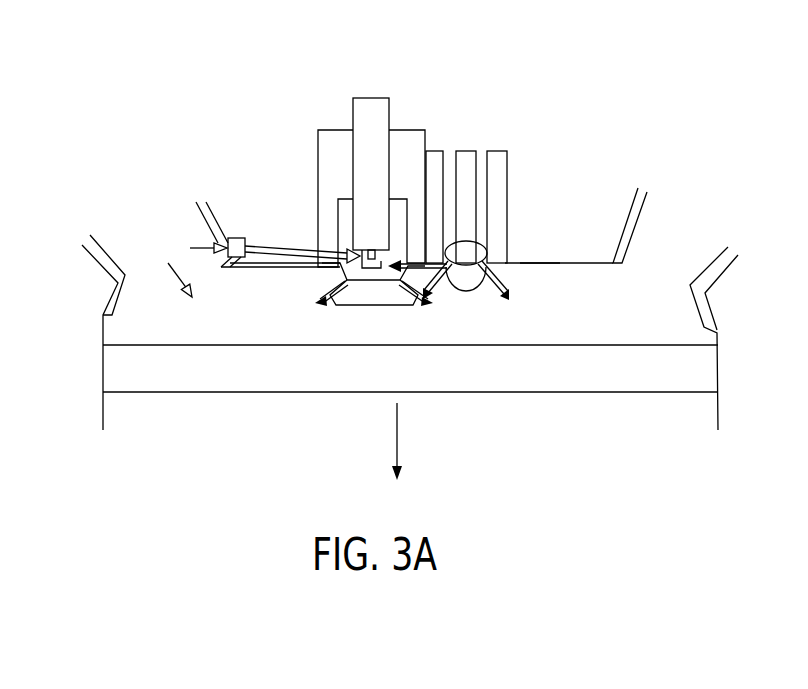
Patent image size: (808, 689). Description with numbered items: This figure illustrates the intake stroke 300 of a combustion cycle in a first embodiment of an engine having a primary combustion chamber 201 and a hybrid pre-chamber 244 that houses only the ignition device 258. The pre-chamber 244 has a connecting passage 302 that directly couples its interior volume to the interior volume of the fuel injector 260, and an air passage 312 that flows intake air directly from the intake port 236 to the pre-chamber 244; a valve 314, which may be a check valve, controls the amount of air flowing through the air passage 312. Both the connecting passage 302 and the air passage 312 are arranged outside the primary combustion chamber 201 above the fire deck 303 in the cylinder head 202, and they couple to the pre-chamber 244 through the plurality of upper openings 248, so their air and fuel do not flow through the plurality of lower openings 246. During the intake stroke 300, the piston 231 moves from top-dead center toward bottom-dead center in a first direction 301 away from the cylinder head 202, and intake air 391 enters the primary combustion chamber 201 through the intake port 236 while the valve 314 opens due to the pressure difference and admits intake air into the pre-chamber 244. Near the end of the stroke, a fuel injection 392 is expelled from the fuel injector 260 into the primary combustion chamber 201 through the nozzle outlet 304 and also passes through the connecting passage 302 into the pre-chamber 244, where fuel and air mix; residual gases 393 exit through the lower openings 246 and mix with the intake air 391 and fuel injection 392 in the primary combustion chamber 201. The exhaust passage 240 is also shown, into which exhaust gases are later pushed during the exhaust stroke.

The intake stroke 300 is at (646, 90).
The ignition device 258 is at (383, 98).
The connecting passage 302 is at (430, 253).
The fuel injector 260 is at (507, 151).
The plurality of upper openings 248 is at (318, 250).
The valve 314 is at (240, 238).
The air passage 312 is at (272, 247).
The intake port 236 is at (160, 247).
The exhaust passage 240 is at (703, 246).
The cylinder head 202 is at (584, 262).
The primary combustion chamber 201 is at (582, 336).
The fire deck 303 is at (537, 264).
The piston 231 is at (412, 379).
The first direction 301 is at (397, 430).
The intake air 391 is at (182, 295).
The plurality of lower openings 246 is at (318, 284).
The pre-chamber 244 is at (342, 304).
The residual gases 393 is at (425, 304).
The nozzle outlet 304 is at (490, 286).
The fuel injection 392 is at (495, 276).